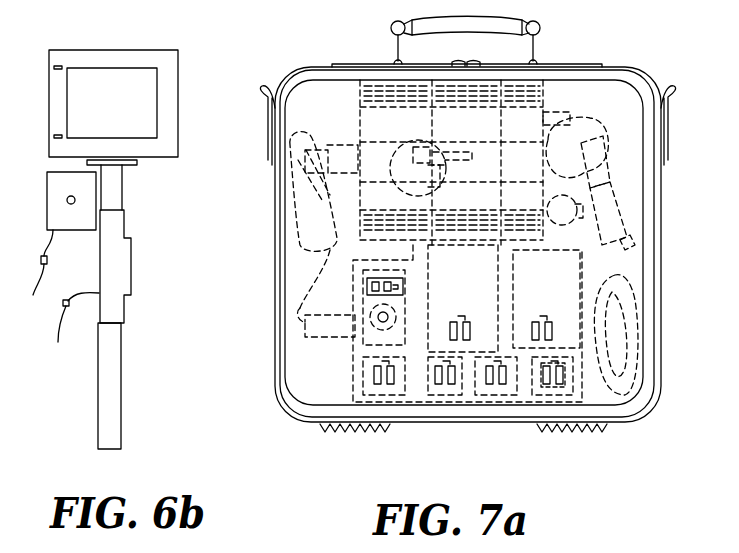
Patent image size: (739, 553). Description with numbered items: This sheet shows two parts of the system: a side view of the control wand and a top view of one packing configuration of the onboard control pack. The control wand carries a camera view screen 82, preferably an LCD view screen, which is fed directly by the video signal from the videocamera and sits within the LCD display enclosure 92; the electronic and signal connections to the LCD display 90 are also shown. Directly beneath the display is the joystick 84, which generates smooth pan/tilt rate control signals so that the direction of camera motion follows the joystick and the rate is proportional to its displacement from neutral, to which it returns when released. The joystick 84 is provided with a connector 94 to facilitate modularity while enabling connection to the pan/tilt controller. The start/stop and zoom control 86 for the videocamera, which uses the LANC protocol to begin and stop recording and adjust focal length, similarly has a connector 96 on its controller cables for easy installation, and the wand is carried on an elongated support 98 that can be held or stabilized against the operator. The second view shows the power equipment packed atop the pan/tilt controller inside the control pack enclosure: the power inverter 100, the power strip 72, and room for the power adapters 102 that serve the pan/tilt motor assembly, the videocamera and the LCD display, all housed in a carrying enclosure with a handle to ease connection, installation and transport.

In FIG. 6b, the LCD display enclosure 92 is at (118, 52).
In FIG. 6b, the camera view screen 82 is at (148, 140).
In FIG. 6b, the LCD display 90 is at (56, 68).
In FIG. 6b, the joystick 84 is at (47, 200).
In FIG. 6b, the start/stop and zoom control 86 is at (133, 268).
In FIG. 6b, the connector 94 is at (30, 278).
In FIG. 6b, the connector 96 is at (70, 333).
In FIG. 6b, the support pole 98 is at (122, 400).
In FIG. 7a, the power inverter 100 is at (510, 123).
In FIG. 7a, the power adapters 102 is at (532, 287).
In FIG. 7a, the power strip 72 is at (539, 378).